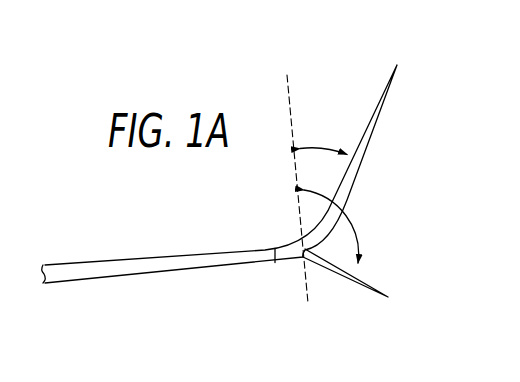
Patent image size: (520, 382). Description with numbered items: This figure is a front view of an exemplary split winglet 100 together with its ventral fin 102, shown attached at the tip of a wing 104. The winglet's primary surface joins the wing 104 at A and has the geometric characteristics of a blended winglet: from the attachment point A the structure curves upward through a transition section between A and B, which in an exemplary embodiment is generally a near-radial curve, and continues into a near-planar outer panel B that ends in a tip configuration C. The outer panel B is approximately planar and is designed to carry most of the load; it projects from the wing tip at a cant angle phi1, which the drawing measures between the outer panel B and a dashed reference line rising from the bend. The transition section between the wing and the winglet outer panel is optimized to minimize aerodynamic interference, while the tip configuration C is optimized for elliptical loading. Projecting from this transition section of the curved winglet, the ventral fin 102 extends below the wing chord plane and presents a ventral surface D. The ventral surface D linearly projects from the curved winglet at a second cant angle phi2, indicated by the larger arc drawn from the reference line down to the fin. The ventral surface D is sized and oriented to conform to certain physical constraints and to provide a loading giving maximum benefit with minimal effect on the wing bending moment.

The winglet 100 is at (414, 176).
The ventral fin 102 is at (340, 290).
The wing 104 is at (141, 248).
The attachment point A is at (275, 248).
The outer panel B is at (367, 127).
The tip configuration C is at (395, 65).
The ventral surface D is at (375, 280).
The cant angle phi1 is at (323, 137).
The cant angle phi2 is at (340, 226).